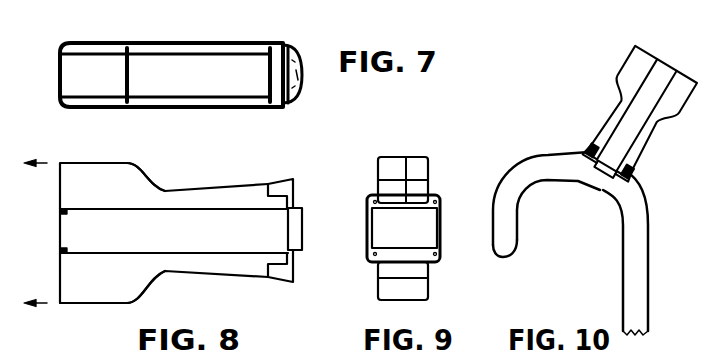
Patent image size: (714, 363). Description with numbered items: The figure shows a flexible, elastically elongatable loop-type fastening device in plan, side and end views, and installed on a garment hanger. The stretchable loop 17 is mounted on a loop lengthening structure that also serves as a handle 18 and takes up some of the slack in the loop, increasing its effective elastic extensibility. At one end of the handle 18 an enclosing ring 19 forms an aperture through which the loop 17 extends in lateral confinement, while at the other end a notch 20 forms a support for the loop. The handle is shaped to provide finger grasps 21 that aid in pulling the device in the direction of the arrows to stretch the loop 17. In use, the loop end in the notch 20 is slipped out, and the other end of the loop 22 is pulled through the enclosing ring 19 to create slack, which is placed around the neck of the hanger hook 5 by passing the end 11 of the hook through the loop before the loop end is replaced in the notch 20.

In FIG. 10, the hanger hook 5 is at (623, 304).
In FIG. 10, the end of the hanger hook 11 is at (503, 257).
In FIG. 7, the stretchable loop 17 is at (177, 44).
In FIG. 8, the stretchable loop 17 is at (127, 208).
In FIG. 9, the stretchable loop 17 is at (408, 157).
In FIG. 7, the handle 18 is at (59, 78).
In FIG. 8, the handle 18 is at (103, 305).
In FIG. 9, the handle 18 is at (378, 172).
In FIG. 7, the enclosing ring 19 is at (283, 44).
In FIG. 8, the enclosing ring 19 is at (288, 230).
In FIG. 9, the enclosing ring 19 is at (367, 234).
In FIG. 8, the notch 20 is at (61, 253).
In FIG. 10, the notch 20 is at (674, 71).
In FIG. 8, the finger grasps 21 is at (133, 169).
In FIG. 8, the end of the loop 22 is at (303, 228).